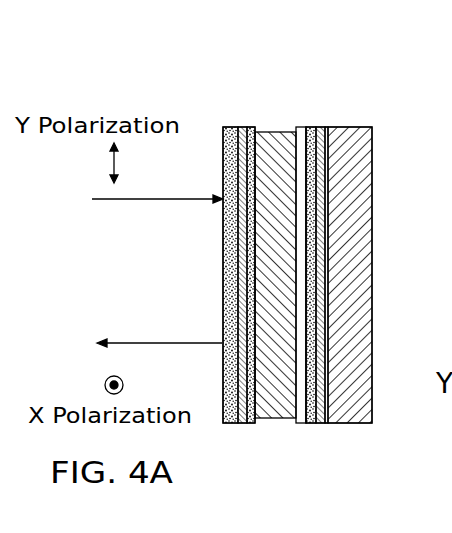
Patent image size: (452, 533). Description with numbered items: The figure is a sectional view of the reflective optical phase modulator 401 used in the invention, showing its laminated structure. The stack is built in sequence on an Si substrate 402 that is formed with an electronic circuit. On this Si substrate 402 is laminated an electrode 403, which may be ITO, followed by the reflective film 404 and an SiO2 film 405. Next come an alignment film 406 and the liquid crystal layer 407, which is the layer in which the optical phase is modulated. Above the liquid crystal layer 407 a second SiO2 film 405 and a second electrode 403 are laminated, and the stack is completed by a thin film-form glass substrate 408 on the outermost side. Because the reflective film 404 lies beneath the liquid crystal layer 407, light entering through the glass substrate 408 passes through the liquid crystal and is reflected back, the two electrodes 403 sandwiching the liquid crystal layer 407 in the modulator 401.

The reflective optical phase modulator 401 is at (243, 63).
The Si substrate 402 is at (367, 128).
The electrode 403 is at (241, 423).
The reflective film 404 is at (326, 243).
The SiO2 film 405 is at (250, 128).
The alignment film 406 is at (300, 423).
The liquid crystal layer 407 is at (275, 132).
The thin film-form glass substrate 408 is at (227, 128).